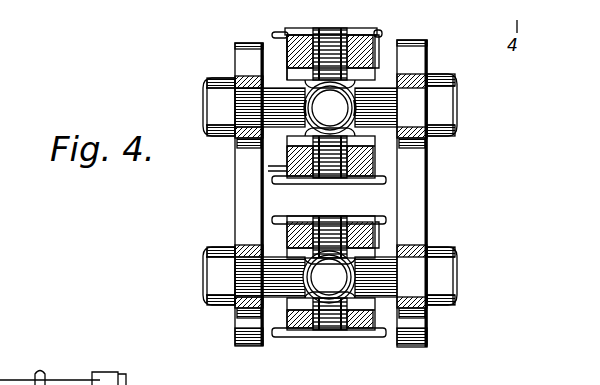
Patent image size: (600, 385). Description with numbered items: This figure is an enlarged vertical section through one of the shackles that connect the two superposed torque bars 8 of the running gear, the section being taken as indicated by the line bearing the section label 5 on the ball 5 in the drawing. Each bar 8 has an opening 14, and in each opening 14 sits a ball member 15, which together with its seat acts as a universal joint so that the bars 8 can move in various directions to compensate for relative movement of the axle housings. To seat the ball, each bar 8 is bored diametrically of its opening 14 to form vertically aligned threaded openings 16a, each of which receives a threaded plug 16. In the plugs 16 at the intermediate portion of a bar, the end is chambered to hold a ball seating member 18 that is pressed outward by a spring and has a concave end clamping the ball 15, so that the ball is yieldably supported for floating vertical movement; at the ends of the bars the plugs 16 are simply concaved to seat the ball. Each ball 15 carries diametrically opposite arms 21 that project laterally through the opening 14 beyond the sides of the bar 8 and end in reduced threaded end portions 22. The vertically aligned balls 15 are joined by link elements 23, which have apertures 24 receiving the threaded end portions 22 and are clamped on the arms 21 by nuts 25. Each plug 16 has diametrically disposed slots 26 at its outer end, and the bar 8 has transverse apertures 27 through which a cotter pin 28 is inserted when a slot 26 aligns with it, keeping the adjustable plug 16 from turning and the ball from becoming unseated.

The shaft 5 is at (330, 28).
The torque bar 8 is at (374, 28).
The opening 14 is at (400, 57).
The ball member 15 is at (329, 192).
The threaded plug 16 is at (348, 30).
The threaded opening 16a is at (283, 169).
The ball seating member 18 is at (107, 0).
The arm 21 is at (237, 147).
The reduced threaded end portion 22 is at (410, 102).
The link element 23 is at (240, 338).
The aperture 24 is at (265, 138).
The nut 25 is at (207, 90).
The slot 26 is at (321, 28).
The transverse aperture 27 is at (318, 185).
The cotter pin 28 is at (146, 0).